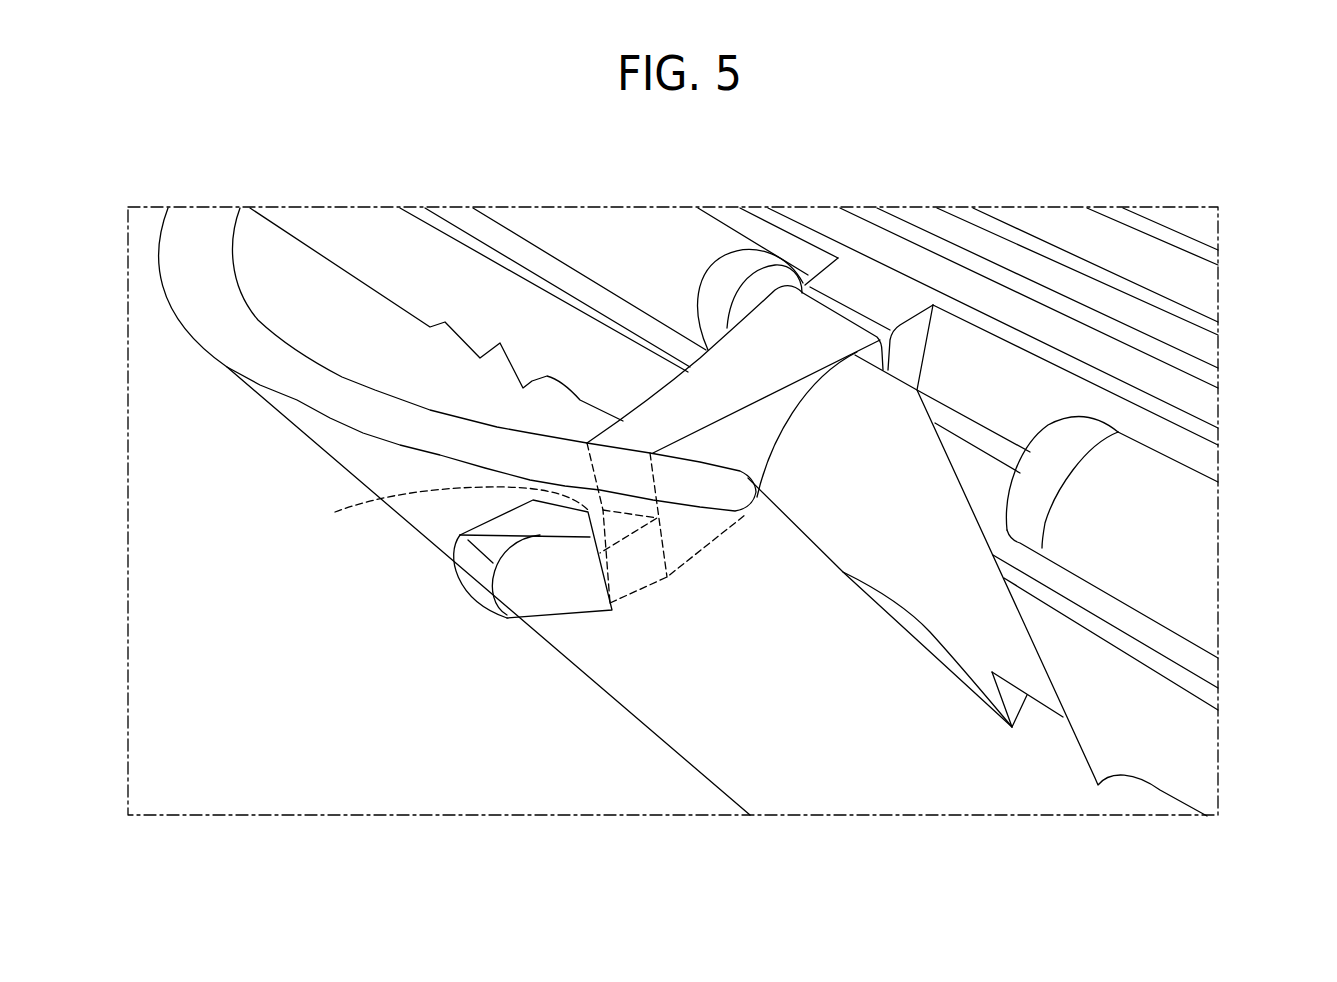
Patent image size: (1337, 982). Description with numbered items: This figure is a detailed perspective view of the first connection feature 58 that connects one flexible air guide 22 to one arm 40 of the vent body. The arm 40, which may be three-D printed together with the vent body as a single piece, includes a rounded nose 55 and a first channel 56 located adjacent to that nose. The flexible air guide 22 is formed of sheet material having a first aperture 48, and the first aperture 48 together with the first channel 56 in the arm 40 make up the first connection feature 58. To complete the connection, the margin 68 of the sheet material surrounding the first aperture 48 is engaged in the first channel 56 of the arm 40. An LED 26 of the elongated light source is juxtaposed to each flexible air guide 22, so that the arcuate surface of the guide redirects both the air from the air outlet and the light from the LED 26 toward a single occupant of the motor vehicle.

The flexible air guide 22 is at (697, 708).
The LED 26 is at (632, 257).
The arm 40 is at (677, 410).
The first aperture 48 is at (607, 577).
The rounded nose 55 is at (483, 582).
The first channel 56 is at (446, 510).
The first connection feature 58 is at (584, 428).
The margin 68 is at (467, 537).